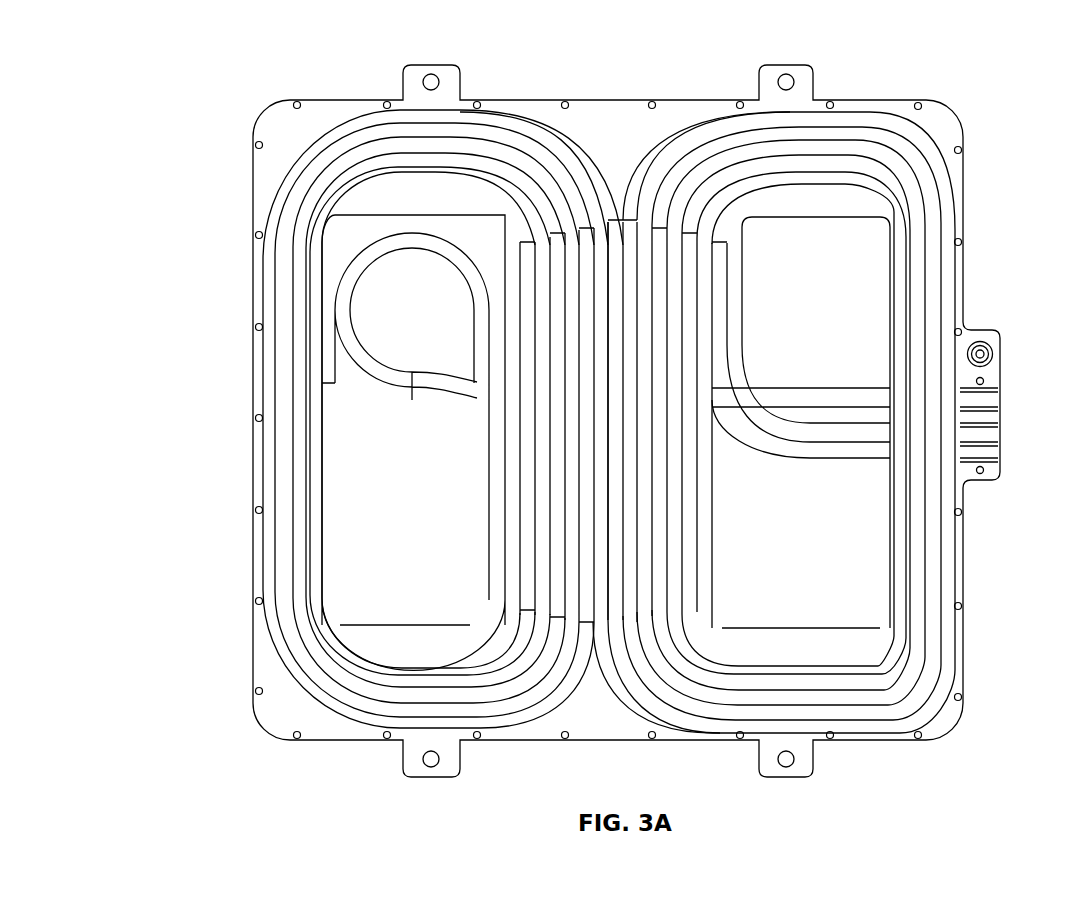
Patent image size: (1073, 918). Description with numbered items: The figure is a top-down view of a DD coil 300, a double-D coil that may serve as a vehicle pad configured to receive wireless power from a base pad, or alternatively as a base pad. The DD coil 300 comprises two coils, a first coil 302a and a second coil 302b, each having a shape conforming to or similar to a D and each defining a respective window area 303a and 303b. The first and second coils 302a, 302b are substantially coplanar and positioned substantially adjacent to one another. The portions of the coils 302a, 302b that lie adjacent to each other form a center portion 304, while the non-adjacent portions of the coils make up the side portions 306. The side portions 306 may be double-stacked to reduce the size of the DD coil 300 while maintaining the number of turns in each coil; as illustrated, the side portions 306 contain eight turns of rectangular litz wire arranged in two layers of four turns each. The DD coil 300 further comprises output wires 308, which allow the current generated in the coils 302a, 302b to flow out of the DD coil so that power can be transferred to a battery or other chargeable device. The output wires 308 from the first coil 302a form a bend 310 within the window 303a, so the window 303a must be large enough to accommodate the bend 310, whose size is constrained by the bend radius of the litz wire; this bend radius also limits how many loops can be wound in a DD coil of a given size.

The DD coil 300 is at (964, 749).
The first coil 302a is at (410, 375).
The second coil 302b is at (826, 383).
The window area 303a is at (345, 515).
The window area 303b is at (855, 346).
The center portion 304 is at (603, 477).
The side portions 306 is at (283, 541).
The output wires 308 is at (994, 397).
The bend 310 is at (355, 252).